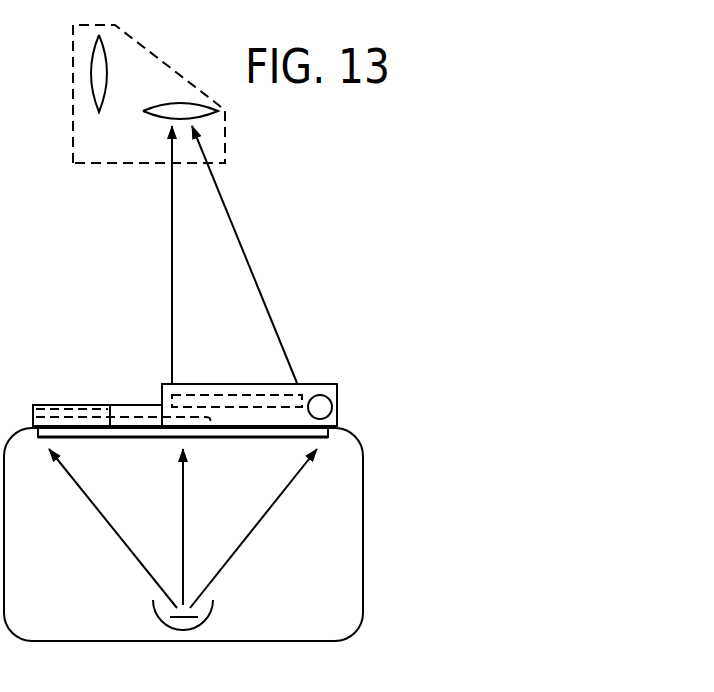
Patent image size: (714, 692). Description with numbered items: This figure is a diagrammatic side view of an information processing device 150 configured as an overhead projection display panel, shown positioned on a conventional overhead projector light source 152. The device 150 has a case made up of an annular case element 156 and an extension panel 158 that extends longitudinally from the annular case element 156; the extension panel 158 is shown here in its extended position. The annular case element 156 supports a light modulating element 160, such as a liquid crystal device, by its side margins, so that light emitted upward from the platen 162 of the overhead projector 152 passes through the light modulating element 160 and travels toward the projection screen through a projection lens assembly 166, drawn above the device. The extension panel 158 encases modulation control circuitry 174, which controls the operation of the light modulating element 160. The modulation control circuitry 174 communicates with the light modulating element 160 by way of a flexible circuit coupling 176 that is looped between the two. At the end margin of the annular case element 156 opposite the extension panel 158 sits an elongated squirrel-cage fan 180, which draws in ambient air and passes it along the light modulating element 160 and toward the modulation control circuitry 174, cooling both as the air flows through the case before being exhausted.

The information processing device 150 is at (225, 420).
The overhead projector light source 152 is at (366, 490).
The annular case element 156 is at (337, 413).
The extension panel 158 is at (47, 405).
The light modulating element 160 is at (204, 395).
The platen 162 is at (267, 440).
The projection lens assembly 166 is at (202, 123).
The modulation control circuitry 174 is at (70, 406).
The flexible circuit coupling 176 is at (133, 417).
The squirrel-cage fan 180 is at (322, 395).